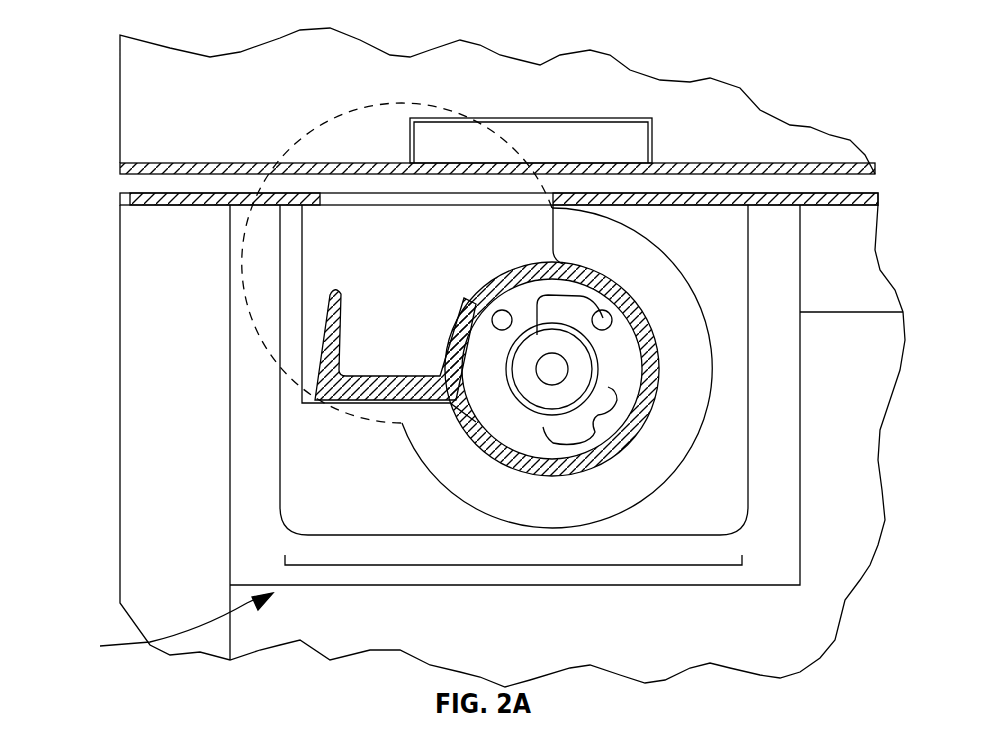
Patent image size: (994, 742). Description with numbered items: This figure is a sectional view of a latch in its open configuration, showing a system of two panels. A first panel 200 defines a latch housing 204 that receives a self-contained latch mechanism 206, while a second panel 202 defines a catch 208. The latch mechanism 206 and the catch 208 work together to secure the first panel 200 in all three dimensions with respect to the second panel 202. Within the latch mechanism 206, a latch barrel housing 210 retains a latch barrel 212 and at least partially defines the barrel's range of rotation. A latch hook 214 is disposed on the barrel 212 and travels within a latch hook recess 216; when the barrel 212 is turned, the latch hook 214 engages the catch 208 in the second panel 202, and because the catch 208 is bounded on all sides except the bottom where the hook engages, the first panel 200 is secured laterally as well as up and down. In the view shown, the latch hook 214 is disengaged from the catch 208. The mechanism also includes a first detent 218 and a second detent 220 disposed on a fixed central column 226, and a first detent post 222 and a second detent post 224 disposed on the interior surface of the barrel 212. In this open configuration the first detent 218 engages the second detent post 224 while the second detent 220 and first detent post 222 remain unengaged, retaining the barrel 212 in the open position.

The first panel 200 is at (137, 423).
The second panel 202 is at (137, 107).
The latch housing 204 is at (155, 627).
The latch mechanism 206 is at (497, 565).
The catch 208 is at (422, 143).
The latch barrel housing 210 is at (487, 478).
The latch barrel 212 is at (460, 340).
The latch hook 214 is at (330, 382).
The latch hook recess 216 is at (317, 232).
The first detent 218 is at (605, 337).
The second detent 220 is at (547, 427).
The first detent post 222 is at (495, 317).
The second detent post 224 is at (610, 318).
The central column 226 is at (580, 365).